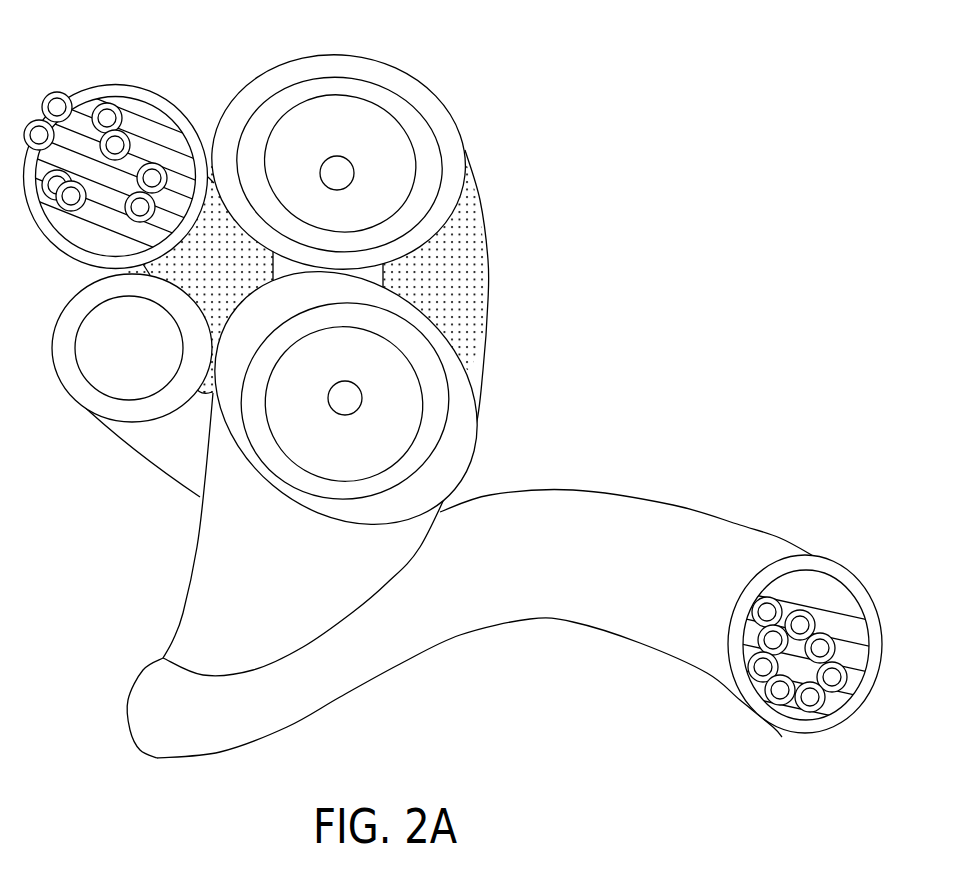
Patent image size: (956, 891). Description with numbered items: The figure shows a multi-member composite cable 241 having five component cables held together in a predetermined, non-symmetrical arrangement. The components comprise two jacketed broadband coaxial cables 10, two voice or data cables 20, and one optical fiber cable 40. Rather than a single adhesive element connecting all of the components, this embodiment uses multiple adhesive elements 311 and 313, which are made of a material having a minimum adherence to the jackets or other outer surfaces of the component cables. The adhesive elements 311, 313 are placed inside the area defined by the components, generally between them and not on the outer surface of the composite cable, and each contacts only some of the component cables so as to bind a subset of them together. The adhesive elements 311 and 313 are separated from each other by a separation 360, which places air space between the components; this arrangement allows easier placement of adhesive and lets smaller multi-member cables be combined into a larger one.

The jacketed coaxial cable 10 is at (373, 58).
The voice or data cable 20 is at (120, 88).
The optical fiber cable 40 is at (130, 422).
The multi-member cable 241 is at (565, 76).
The adhesive element 311 is at (440, 277).
The adhesive element 313 is at (203, 388).
The separation 360 is at (440, 310).